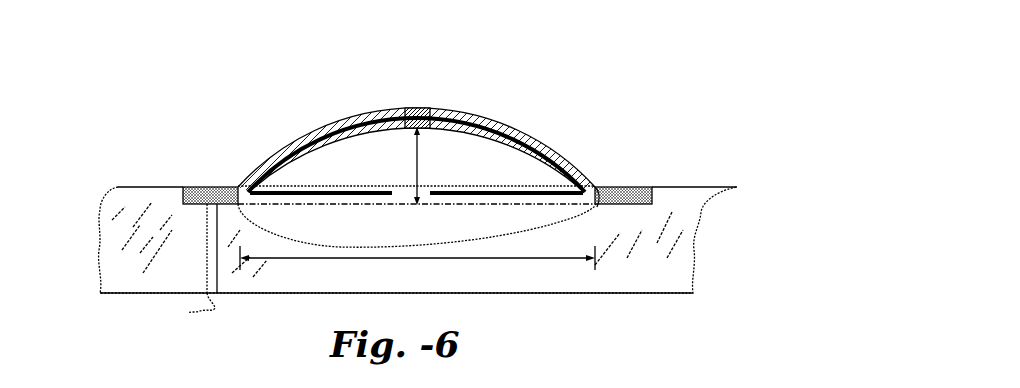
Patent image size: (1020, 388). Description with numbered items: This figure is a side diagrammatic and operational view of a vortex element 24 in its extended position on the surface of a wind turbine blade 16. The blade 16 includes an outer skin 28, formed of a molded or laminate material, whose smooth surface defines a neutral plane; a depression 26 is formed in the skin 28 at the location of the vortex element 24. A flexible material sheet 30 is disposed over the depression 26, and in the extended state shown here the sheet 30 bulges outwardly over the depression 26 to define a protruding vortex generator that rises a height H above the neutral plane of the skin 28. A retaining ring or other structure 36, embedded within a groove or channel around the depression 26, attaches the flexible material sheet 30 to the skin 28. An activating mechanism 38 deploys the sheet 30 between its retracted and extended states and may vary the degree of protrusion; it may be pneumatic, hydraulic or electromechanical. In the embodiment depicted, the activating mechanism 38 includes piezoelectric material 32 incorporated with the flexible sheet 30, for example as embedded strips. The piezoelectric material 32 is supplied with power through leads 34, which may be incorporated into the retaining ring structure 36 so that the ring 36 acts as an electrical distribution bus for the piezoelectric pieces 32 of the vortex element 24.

The blade 16 is at (648, 100).
The vortex element 24 is at (330, 100).
The depression 26 is at (520, 215).
The outer skin 28 is at (630, 262).
The flexible material sheet 30 is at (425, 105).
The piezoelectric material 32 is at (297, 143).
The leads 34 is at (218, 322).
The retaining ring 36 is at (632, 167).
The activating mechanism 38 is at (186, 226).